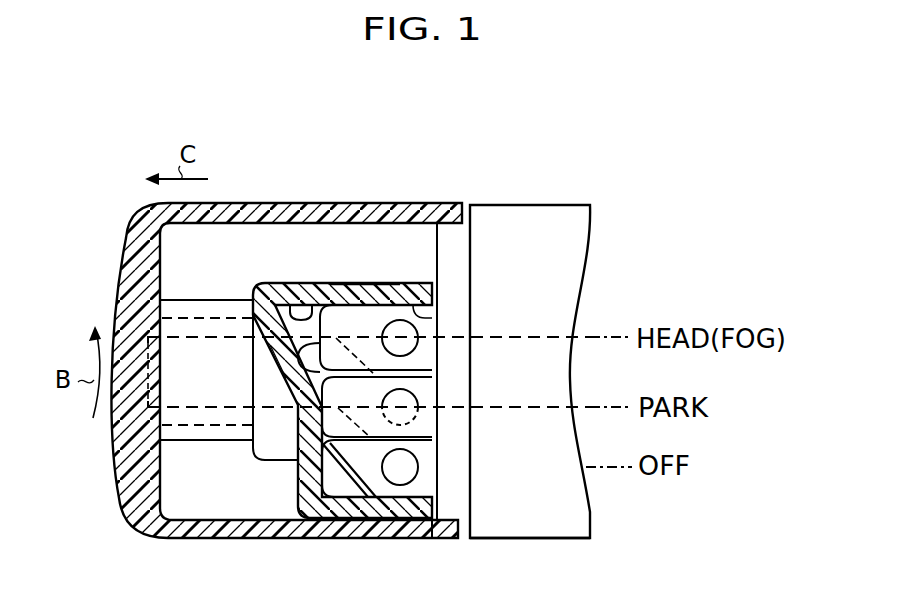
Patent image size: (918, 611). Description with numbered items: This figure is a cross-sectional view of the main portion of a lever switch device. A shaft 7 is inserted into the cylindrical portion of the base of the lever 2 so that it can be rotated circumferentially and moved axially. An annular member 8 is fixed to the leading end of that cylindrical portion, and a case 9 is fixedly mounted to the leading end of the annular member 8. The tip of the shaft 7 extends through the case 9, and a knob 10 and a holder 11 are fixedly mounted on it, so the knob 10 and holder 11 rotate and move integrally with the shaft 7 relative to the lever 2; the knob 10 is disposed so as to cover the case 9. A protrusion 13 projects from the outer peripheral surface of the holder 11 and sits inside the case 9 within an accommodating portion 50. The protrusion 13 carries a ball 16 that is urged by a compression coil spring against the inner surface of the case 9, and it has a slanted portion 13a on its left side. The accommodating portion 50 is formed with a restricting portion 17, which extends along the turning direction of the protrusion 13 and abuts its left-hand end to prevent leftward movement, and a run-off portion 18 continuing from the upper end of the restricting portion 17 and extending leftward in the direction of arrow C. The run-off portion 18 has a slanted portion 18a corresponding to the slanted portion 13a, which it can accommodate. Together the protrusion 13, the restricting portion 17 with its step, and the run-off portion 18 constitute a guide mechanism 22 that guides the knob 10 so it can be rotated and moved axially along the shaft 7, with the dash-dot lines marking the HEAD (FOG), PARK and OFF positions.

The lever 2 is at (542, 203).
The shaft 7 is at (243, 392).
The annular member 8 is at (553, 538).
The case 9 is at (272, 283).
The knob 10 is at (132, 222).
The holder 11 is at (189, 445).
The protrusion 13 is at (410, 494).
The slanted portion 13a is at (334, 520).
The ball 16 is at (398, 472).
The restricting portion 17 is at (437, 323).
The run-off portion 18 is at (300, 306).
The slanted portion 18a is at (272, 356).
The guide mechanism 22 is at (362, 296).
The accommodating portion 50 is at (330, 420).